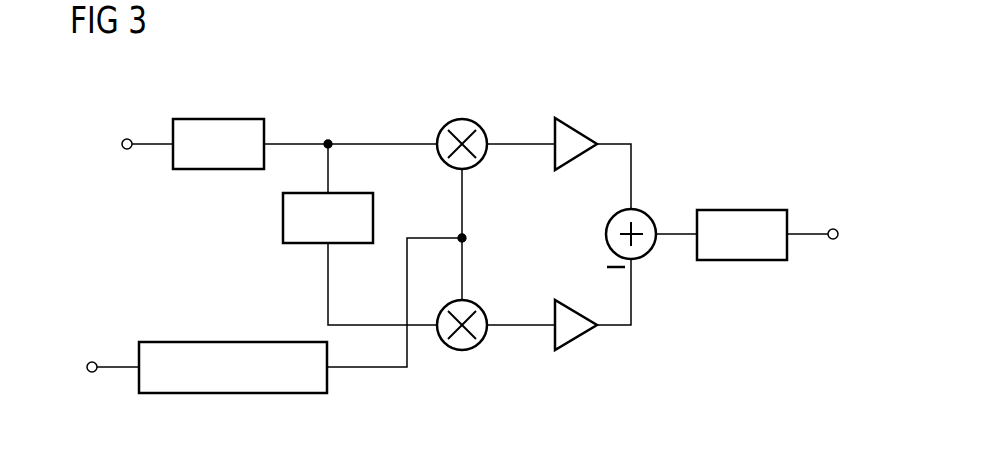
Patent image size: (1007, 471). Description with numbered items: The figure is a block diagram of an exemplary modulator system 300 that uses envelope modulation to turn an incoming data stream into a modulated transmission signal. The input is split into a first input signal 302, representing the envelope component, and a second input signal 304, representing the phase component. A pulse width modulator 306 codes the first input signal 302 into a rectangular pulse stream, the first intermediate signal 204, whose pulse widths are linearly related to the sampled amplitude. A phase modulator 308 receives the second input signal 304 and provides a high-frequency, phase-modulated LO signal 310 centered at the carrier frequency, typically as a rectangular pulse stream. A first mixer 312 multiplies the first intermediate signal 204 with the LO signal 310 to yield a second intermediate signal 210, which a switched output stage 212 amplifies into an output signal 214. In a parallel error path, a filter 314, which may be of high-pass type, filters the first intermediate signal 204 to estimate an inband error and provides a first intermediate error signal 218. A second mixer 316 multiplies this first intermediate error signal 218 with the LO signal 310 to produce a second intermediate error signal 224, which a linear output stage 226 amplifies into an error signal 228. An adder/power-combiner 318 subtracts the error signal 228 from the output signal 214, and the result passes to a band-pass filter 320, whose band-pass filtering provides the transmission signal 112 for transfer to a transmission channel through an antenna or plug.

The system 300 is at (715, 95).
The first input signal 302 is at (127, 139).
The second input signal 304 is at (92, 361).
The pulse width modulator 306 is at (207, 119).
The phase modulator 308 is at (195, 342).
The LO signal 310 is at (368, 369).
The first mixer 312 is at (462, 119).
The filter 314 is at (283, 212).
The second mixer 316 is at (461, 351).
The adder/power-combiner 318 is at (606, 229).
The band-pass filter 320 is at (748, 210).
The transmission signal 112 is at (836, 228).
The first intermediate signal 204 is at (291, 143).
The second intermediate signal 210 is at (516, 142).
The switched output stage 212 is at (574, 125).
The output signal 214 is at (632, 177).
The first intermediate error signal 218 is at (328, 270).
The second intermediate error signal 224 is at (522, 328).
The linear output stage 226 is at (578, 340).
The error signal 228 is at (632, 280).